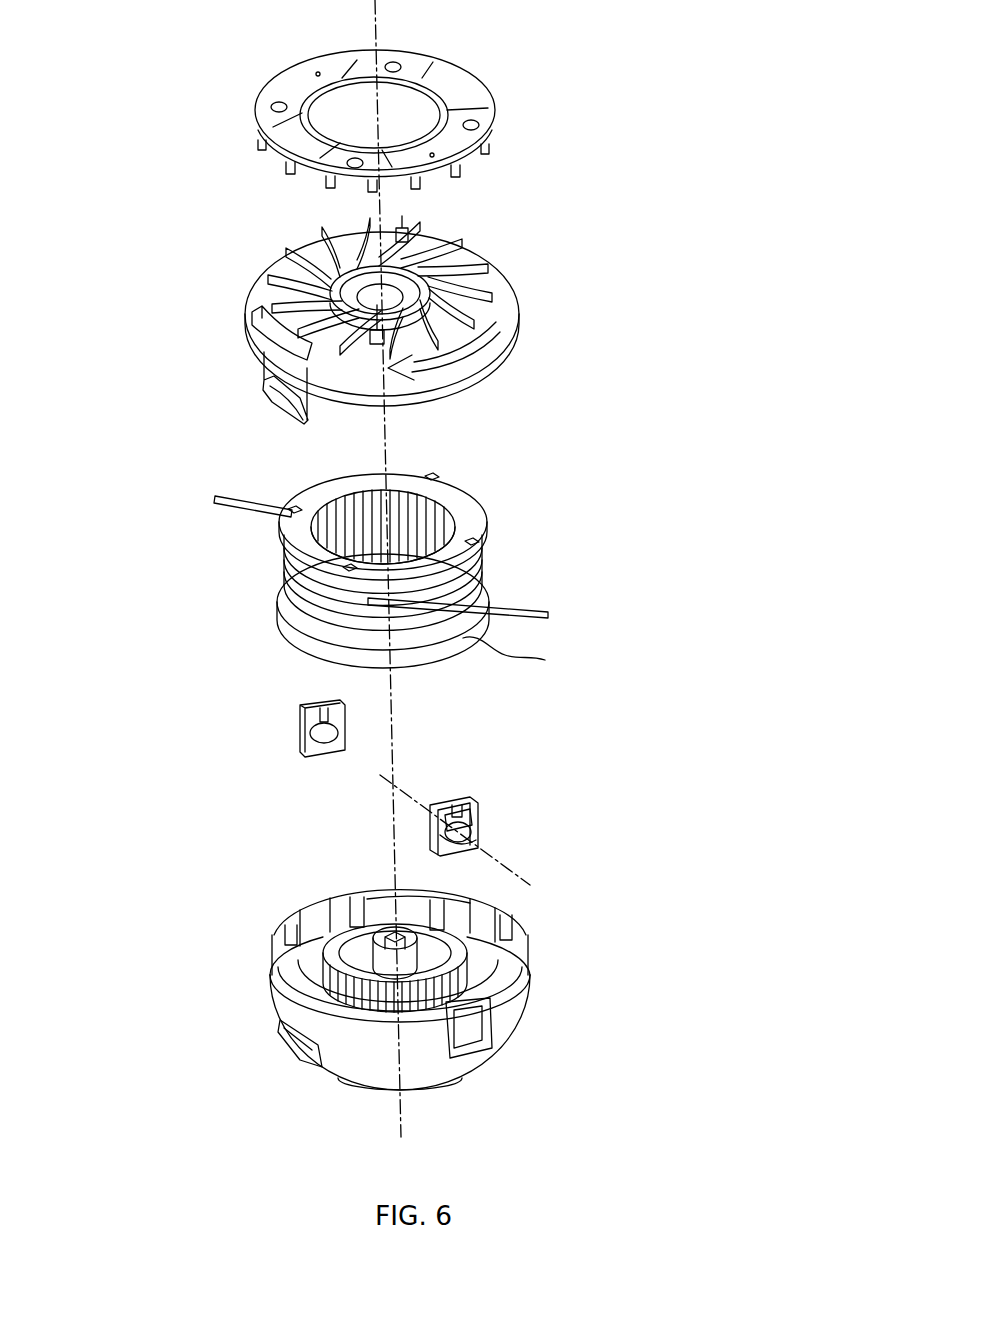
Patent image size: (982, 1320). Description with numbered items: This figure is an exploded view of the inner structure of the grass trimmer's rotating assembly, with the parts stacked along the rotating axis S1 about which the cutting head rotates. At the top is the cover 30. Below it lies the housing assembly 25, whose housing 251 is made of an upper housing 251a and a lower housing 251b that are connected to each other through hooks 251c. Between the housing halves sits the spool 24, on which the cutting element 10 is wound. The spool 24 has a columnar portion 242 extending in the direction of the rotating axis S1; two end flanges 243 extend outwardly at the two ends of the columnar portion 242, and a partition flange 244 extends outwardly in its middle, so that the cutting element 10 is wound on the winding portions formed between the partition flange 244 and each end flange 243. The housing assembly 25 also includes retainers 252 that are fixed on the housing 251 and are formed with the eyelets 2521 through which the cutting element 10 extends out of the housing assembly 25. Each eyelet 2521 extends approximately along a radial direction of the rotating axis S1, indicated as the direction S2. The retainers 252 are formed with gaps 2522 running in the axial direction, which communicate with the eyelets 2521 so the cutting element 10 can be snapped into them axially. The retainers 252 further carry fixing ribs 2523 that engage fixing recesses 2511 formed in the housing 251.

The cover 30 is at (548, 117).
The upper housing 251a is at (520, 315).
The hooks 251c is at (258, 382).
The spool 24 is at (434, 570).
The end flanges 243 is at (275, 530).
The partition flange 244 is at (282, 573).
The columnar portion 242 is at (290, 620).
The cutting element 10 is at (560, 613).
The gaps 2522 is at (427, 805).
The fixing ribs 2523 is at (473, 790).
The retainers 252 is at (522, 775).
The eyelets 2521 is at (482, 837).
The direction S2 is at (472, 839).
The housing assembly 25 is at (190, 938).
The housing 251 is at (529, 992).
The lower housing 251b is at (481, 999).
The fixing recesses 2511 is at (532, 1003).
The rotating axis S1 is at (406, 577).